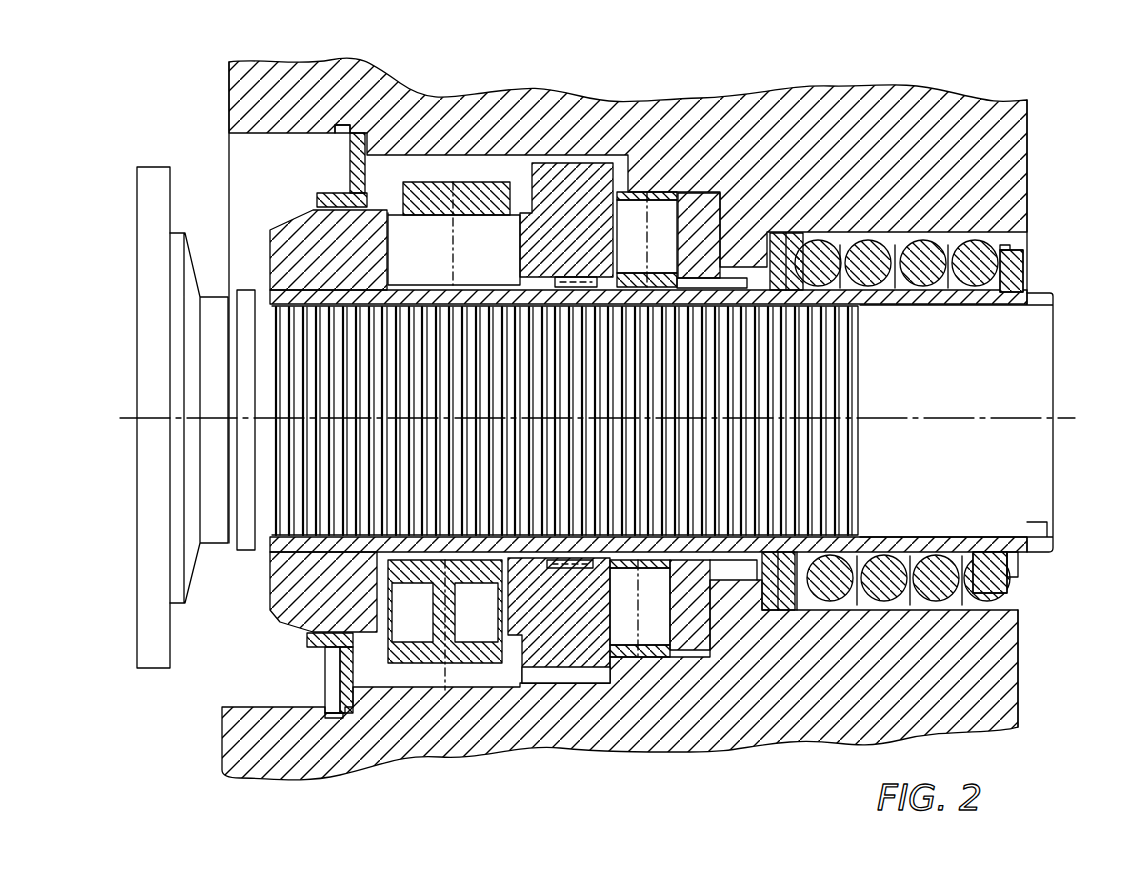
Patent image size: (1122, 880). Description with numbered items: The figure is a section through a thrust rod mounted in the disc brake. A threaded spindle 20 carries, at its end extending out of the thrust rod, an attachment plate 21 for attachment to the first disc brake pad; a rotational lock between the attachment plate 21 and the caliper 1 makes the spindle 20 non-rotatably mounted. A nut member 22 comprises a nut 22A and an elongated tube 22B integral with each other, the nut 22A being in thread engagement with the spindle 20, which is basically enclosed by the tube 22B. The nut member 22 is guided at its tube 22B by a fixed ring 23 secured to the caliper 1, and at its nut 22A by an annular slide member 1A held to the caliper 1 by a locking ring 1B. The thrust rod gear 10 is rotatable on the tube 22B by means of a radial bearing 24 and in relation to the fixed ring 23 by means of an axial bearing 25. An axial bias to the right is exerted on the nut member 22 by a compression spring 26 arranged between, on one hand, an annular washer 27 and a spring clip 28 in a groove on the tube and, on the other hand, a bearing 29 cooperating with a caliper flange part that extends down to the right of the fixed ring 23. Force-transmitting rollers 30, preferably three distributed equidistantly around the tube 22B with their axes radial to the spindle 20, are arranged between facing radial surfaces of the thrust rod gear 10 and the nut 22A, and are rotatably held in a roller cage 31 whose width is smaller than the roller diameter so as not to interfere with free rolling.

The caliper 1 is at (773, 690).
The annular slide member 1A is at (390, 753).
The locking ring 1B is at (330, 693).
The thrust rod gear 10 is at (553, 182).
The threaded spindle 20 is at (322, 297).
The attachment plate 21 is at (165, 182).
The nut member 22 is at (285, 243).
The nut 22A is at (300, 597).
The elongated tube 22B is at (687, 553).
The fixed ring 23 is at (708, 203).
The radial bearing 24 is at (580, 277).
The axial bearing 25 is at (657, 222).
The compression spring 26 is at (868, 262).
The annular washer 27 is at (1005, 250).
The spring clip 28 is at (1030, 282).
The bearing 29 is at (788, 232).
The force-transmitting rollers 30 is at (408, 248).
The roller cage 31 is at (430, 197).